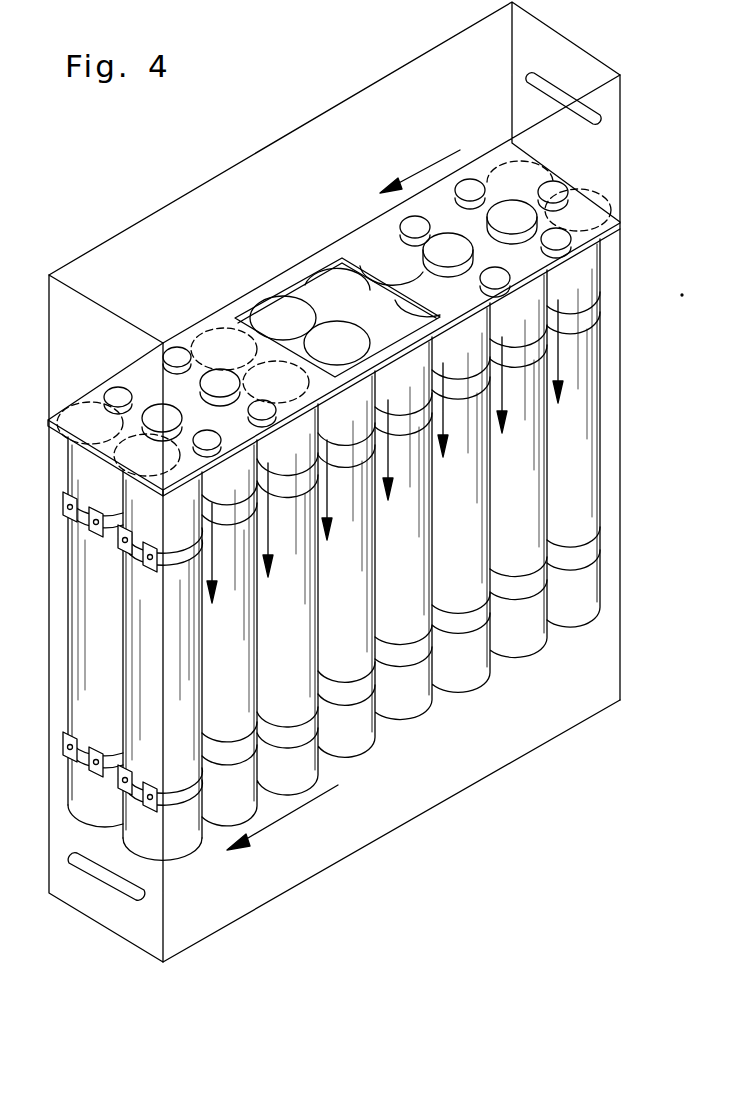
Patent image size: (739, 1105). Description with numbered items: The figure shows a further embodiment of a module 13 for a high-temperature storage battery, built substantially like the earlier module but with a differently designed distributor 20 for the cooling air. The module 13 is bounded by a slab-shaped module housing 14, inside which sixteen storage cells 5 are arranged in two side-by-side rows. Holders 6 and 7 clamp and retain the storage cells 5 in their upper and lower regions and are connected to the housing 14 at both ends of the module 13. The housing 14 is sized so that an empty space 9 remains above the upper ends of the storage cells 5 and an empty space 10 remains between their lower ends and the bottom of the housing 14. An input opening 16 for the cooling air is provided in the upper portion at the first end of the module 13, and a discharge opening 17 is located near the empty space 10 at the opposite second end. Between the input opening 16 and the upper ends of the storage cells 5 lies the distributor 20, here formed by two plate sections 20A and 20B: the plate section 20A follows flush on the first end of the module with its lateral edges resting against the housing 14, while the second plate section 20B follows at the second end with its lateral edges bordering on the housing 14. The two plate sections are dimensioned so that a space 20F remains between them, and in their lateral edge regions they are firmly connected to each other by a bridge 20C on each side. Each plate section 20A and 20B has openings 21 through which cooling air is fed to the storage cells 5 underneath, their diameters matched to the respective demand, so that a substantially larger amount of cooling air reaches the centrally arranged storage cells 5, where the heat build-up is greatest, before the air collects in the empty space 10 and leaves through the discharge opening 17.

The storage cell 5 is at (535, 639).
The holder 6 is at (583, 317).
The holder 7 is at (590, 548).
The empty space 9 is at (213, 312).
The empty space 10 is at (357, 757).
The module 13 is at (452, 797).
The module housing 14 is at (47, 587).
The input opening 16 is at (558, 98).
The discharge opening 17 is at (133, 904).
The distributor 20 is at (577, 232).
The plate section 20A is at (118, 400).
The plate section 20B is at (497, 281).
The bridge 20C is at (362, 323).
The space 20F is at (282, 313).
The opening 21 is at (513, 213).